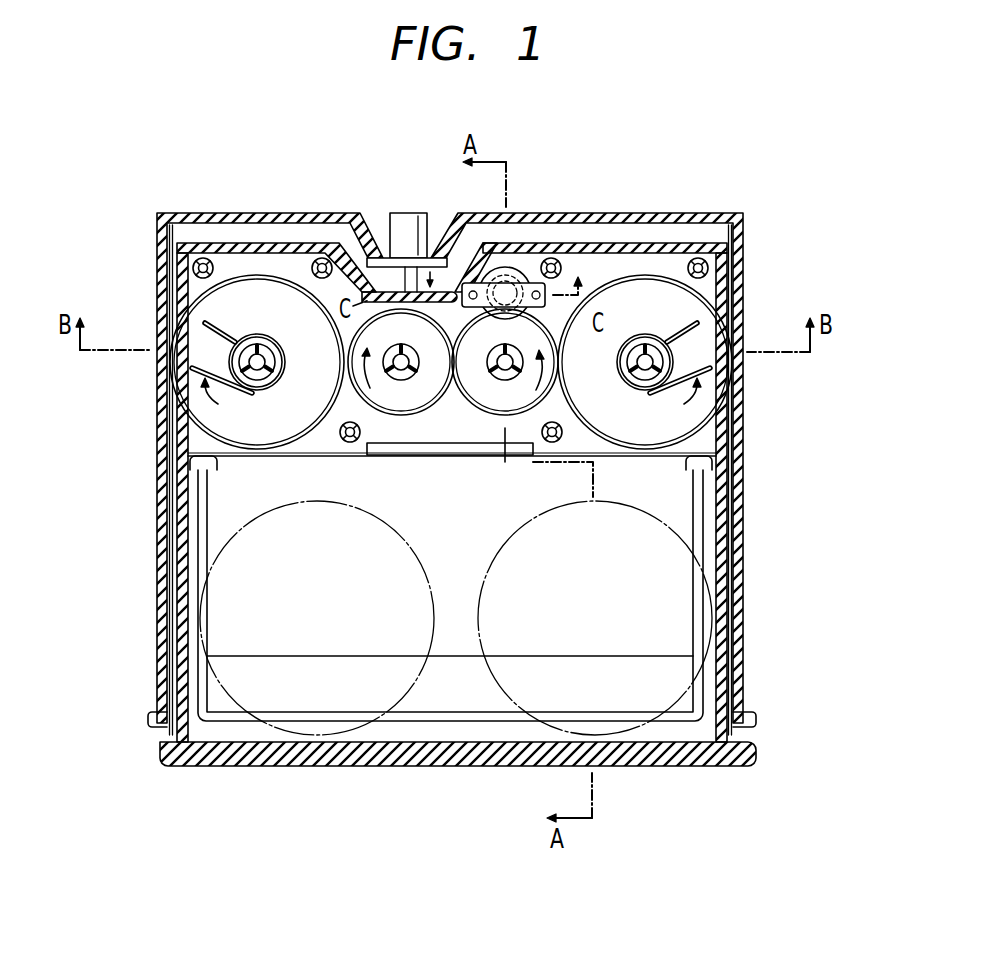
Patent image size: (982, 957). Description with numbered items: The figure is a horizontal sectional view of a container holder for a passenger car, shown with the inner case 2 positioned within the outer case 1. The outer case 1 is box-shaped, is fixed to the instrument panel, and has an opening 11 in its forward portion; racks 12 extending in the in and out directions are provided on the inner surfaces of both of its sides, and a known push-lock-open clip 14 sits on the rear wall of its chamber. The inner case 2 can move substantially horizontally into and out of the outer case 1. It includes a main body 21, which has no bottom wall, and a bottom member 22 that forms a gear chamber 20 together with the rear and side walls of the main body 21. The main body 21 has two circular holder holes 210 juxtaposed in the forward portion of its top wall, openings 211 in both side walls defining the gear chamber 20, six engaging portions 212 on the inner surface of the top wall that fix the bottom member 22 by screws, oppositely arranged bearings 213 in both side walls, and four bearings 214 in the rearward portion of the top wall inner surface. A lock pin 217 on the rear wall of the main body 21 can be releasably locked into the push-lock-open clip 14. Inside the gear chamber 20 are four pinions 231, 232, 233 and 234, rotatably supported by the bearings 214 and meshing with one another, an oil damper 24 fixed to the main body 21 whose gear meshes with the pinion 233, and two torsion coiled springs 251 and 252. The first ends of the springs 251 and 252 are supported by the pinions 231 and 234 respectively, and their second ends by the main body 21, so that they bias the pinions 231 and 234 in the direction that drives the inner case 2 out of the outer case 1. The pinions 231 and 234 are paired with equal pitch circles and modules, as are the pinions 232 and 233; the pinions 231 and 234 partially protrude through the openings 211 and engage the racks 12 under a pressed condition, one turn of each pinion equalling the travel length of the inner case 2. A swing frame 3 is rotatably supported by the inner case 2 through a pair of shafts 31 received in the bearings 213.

The outer case 1 is at (740, 565).
The inner case 2 is at (70, 445).
The swing frame 3 is at (447, 692).
The opening 11 is at (757, 723).
The racks 12 is at (171, 640).
The push-lock-open clip 14 is at (392, 226).
The gear chamber 20 is at (446, 428).
The main body 21 is at (188, 458).
The bottom member 22 is at (188, 438).
The oil damper 24 is at (518, 280).
The shafts 31 is at (188, 478).
The holder holes 210 is at (262, 517).
The openings 211 is at (182, 300).
The engaging portions 212 is at (205, 258).
The bearings 213 is at (208, 479).
The bearings 214 is at (266, 338).
The lock pin 217 is at (410, 245).
The pinion 231 is at (295, 448).
The pinion 232 is at (413, 412).
The pinion 233 is at (463, 404).
The pinion 234 is at (655, 450).
The torsion coiled spring 251 is at (281, 376).
The torsion coiled spring 252 is at (620, 368).